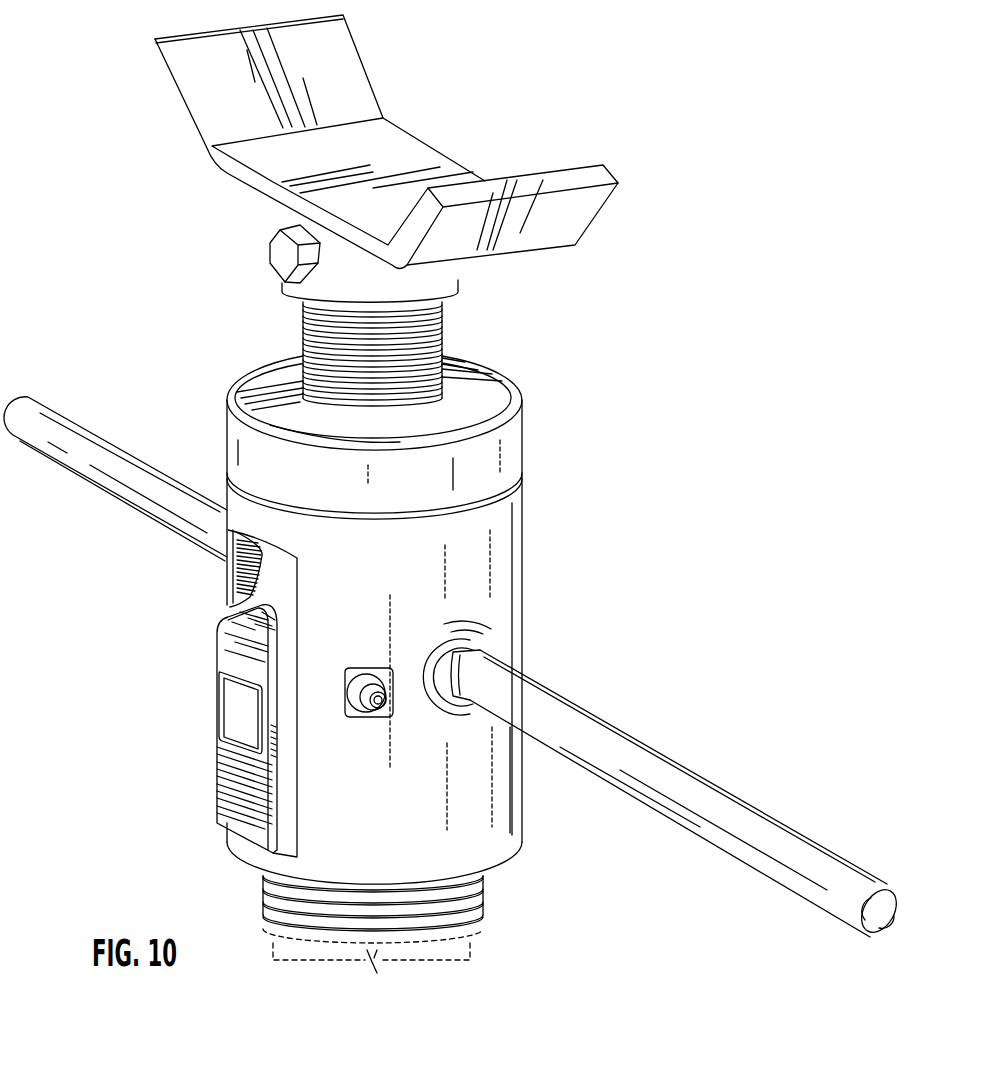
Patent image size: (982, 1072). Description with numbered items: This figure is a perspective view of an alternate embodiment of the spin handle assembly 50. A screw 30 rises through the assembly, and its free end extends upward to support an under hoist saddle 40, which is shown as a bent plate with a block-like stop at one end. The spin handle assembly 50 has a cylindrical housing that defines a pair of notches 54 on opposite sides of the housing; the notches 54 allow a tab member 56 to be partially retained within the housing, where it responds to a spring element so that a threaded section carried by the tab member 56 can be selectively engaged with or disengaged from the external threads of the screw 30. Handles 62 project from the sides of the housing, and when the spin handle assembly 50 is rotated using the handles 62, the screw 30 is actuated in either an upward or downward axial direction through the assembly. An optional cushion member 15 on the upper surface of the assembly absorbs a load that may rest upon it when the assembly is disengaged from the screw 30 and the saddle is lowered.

The cushion member 15 is at (522, 403).
The screw 30 is at (302, 332).
The under hoist saddle 40 is at (370, 78).
The spin handle assembly 50 is at (544, 551).
The notches 54 is at (243, 570).
The tab member 56 is at (232, 818).
The handles 62 is at (640, 737).